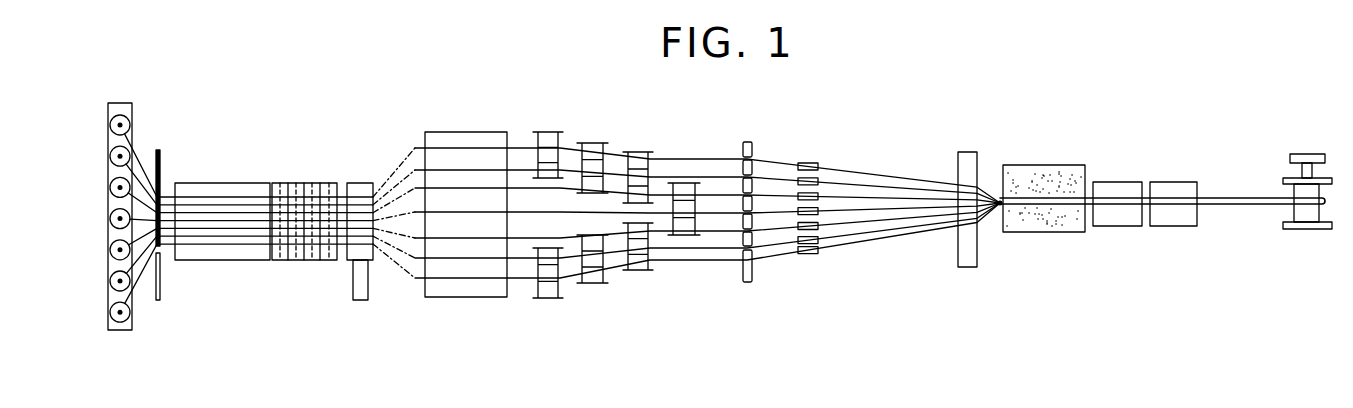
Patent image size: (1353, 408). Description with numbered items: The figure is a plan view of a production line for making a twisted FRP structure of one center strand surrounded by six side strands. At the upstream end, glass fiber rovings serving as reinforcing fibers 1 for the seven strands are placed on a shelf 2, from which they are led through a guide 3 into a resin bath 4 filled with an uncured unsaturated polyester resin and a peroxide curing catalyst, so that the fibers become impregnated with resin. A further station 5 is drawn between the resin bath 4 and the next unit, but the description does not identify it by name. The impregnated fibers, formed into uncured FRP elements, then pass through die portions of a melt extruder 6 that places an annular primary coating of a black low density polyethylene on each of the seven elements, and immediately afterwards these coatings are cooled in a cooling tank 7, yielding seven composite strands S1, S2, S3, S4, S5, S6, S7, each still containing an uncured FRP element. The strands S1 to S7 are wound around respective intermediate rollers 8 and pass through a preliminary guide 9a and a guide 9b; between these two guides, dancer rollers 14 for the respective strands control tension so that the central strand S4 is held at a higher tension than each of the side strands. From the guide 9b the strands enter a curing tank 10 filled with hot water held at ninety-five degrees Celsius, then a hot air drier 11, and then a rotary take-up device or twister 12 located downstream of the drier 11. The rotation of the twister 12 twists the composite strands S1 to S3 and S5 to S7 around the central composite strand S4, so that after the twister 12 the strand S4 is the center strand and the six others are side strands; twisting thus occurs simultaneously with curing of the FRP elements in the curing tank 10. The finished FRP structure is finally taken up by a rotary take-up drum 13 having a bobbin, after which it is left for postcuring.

The reinforcing fibers 1 is at (113, 331).
The shelf 2 is at (135, 300).
The guide 3 is at (158, 300).
The resin bath 4 is at (215, 261).
The filter unit 5 is at (313, 261).
The melt extruder 6 is at (362, 301).
The cooling tank 7 is at (450, 298).
The composite strand S1 is at (452, 148).
The composite strand S2 is at (487, 170).
The composite strand S3 is at (530, 186).
The central composite strand S4 is at (540, 212).
The composite strand S5 is at (517, 260).
The composite strand S6 is at (483, 262).
The composite strand S7 is at (432, 280).
The intermediate rollers 8 is at (640, 152).
The preliminary guide 9a is at (748, 142).
The guide 9b is at (967, 152).
The curing tank 10 is at (1040, 226).
The hot air drier 11 is at (1117, 221).
The rotary take-up device or twister 12 is at (1175, 221).
The rotary take-up drum 13 is at (1305, 230).
The dancer rollers 14 is at (806, 254).